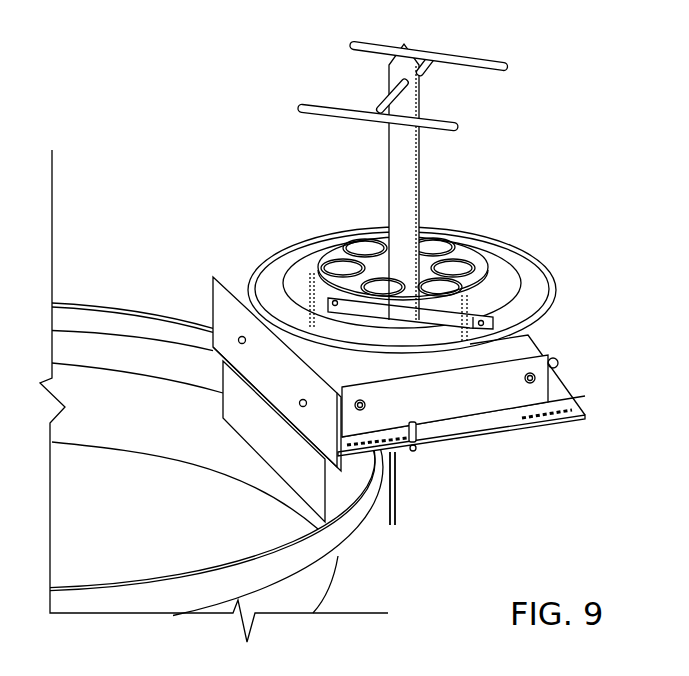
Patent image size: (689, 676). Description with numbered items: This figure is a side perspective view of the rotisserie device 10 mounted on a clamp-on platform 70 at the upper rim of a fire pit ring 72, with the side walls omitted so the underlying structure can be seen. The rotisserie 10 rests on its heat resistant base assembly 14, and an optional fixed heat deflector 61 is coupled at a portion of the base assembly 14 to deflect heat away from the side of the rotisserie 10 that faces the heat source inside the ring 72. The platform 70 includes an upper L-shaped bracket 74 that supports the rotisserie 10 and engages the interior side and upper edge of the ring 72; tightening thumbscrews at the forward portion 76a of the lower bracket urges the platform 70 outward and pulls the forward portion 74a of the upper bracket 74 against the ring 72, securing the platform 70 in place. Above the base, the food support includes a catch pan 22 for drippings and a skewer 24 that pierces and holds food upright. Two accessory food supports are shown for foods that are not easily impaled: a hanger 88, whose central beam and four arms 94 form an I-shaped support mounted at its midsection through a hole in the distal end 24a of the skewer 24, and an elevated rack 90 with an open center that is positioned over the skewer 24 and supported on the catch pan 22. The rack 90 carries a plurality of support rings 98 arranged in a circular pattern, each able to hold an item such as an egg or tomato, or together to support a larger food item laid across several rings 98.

The rotisserie device 10 is at (238, 163).
The base assembly 14 is at (391, 426).
The catch pan 22 is at (513, 272).
The skewer 24 is at (395, 185).
The distal end of the skewer 24a is at (432, 85).
The fixed heat deflector 61 is at (230, 327).
The clamp-on platform 70 is at (416, 464).
The fire pit ring 72 is at (93, 320).
The upper L-shaped bracket 74 is at (485, 425).
The forward portion of the upper L-shaped bracket 74a is at (272, 425).
The forward portion of the lower bracket 76a is at (383, 507).
The hanger 88 is at (419, 97).
The elevated rack 90 is at (458, 250).
The arms 94 is at (503, 68).
The support rings 98 is at (399, 238).